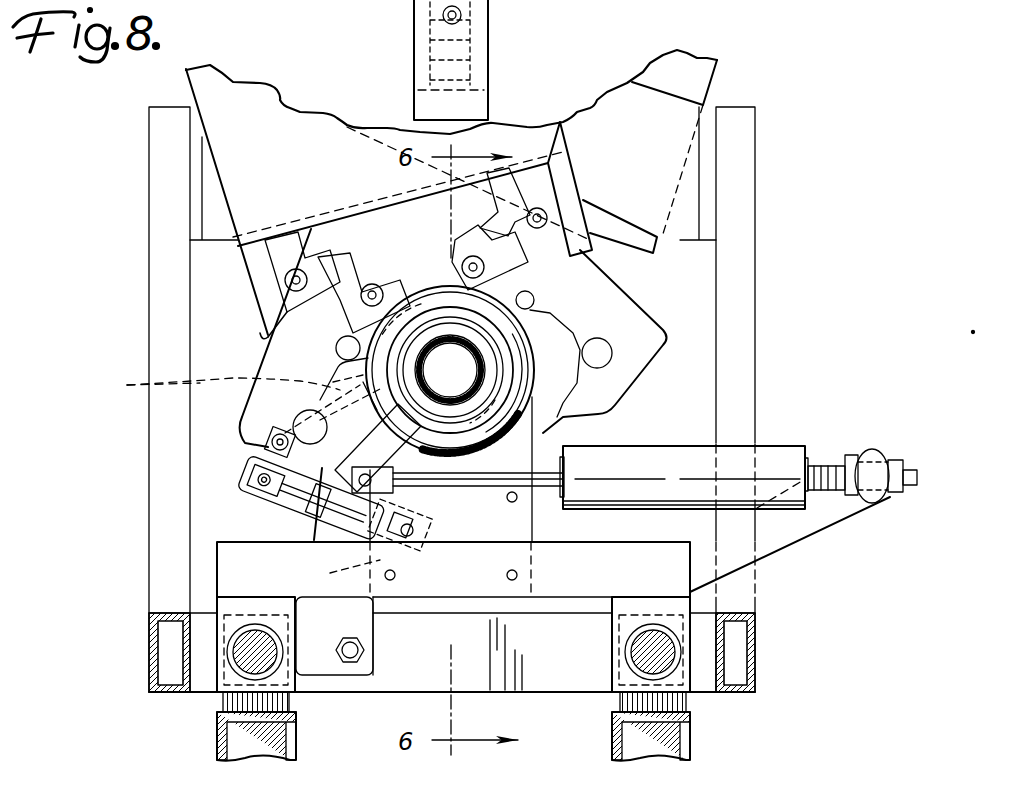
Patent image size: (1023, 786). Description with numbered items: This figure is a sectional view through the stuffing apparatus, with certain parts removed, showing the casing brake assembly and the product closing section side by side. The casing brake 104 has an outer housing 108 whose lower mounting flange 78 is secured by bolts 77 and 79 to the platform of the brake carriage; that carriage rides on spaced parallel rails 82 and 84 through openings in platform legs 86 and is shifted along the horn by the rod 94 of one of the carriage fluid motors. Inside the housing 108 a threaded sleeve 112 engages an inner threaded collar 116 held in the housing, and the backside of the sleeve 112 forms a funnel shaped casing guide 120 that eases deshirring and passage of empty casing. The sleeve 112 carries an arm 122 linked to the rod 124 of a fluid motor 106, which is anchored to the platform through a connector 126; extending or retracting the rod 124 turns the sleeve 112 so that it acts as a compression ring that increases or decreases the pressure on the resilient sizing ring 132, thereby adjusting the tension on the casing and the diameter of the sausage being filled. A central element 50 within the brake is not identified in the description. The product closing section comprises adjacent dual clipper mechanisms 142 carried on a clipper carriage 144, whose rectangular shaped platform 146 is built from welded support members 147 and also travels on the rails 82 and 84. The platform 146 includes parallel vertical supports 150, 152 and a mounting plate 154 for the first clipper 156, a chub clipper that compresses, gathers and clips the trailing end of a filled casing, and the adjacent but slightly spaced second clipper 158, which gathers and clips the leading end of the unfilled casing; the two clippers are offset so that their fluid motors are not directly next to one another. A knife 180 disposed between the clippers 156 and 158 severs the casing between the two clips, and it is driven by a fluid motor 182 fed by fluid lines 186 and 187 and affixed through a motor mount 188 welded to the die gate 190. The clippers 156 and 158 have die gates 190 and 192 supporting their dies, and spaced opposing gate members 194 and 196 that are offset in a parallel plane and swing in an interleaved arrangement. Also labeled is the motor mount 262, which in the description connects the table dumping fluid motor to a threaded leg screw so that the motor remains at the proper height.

The hub 50 is at (450, 370).
The bolt 77 is at (502, 548).
The lower mounting flange 78 is at (540, 527).
The bolt 79 is at (518, 575).
The rail 82 is at (630, 645).
The rail 84 is at (268, 663).
The platform leg 86 is at (228, 602).
The rod 94 is at (362, 650).
The casing brake 104 is at (418, 276).
The fluid motor 106 is at (766, 447).
The outer housing 108 is at (540, 434).
The sleeve 112 is at (565, 390).
The inner threaded collar 116 is at (570, 406).
The funnel shaped casing guide 120 is at (500, 352).
The arm 122 is at (415, 482).
The rod 124 is at (418, 512).
The connector 126 is at (868, 460).
The sizing ring 132 is at (533, 322).
The dual clipper mechanisms 142 is at (232, 291).
The clipper carriage 144 is at (762, 644).
The rectangular shaped platform 146 is at (163, 654).
The support member 147 is at (530, 688).
The vertical support 150 is at (160, 160).
The vertical support 152 is at (745, 213).
The mounting plate 154 is at (205, 214).
The first clipper 156 is at (735, 70).
The second clipper 158 is at (285, 146).
The knife 180 is at (140, 383).
The fluid motor 182 is at (330, 542).
The fluid line 186 is at (330, 573).
The fluid line 187 is at (318, 522).
The motor mount 188 is at (244, 491).
The die gate 190 is at (242, 420).
The die gate 192 is at (632, 287).
The gate member 194 is at (335, 370).
The gate member 196 is at (610, 372).
The motor mount 262 is at (477, 102).